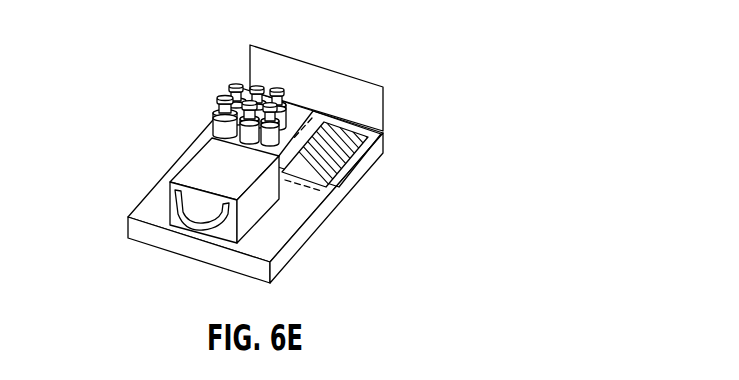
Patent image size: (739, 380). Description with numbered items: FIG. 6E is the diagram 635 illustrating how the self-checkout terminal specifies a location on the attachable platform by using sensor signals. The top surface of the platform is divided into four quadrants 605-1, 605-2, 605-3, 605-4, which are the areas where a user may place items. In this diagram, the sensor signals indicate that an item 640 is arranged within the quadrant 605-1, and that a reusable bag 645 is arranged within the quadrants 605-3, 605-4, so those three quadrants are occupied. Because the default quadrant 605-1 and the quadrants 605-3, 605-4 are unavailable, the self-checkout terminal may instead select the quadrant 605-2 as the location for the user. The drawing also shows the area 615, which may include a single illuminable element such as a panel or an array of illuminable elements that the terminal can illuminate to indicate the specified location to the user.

The quadrant 605-1 is at (226, 80).
The quadrant 605-2 is at (374, 152).
The quadrant 605-3 is at (270, 238).
The quadrant 605-4 is at (158, 212).
The area 615 is at (340, 178).
The diagram 635 is at (360, 51).
The item 640 is at (213, 122).
The reusable bag 645 is at (193, 173).